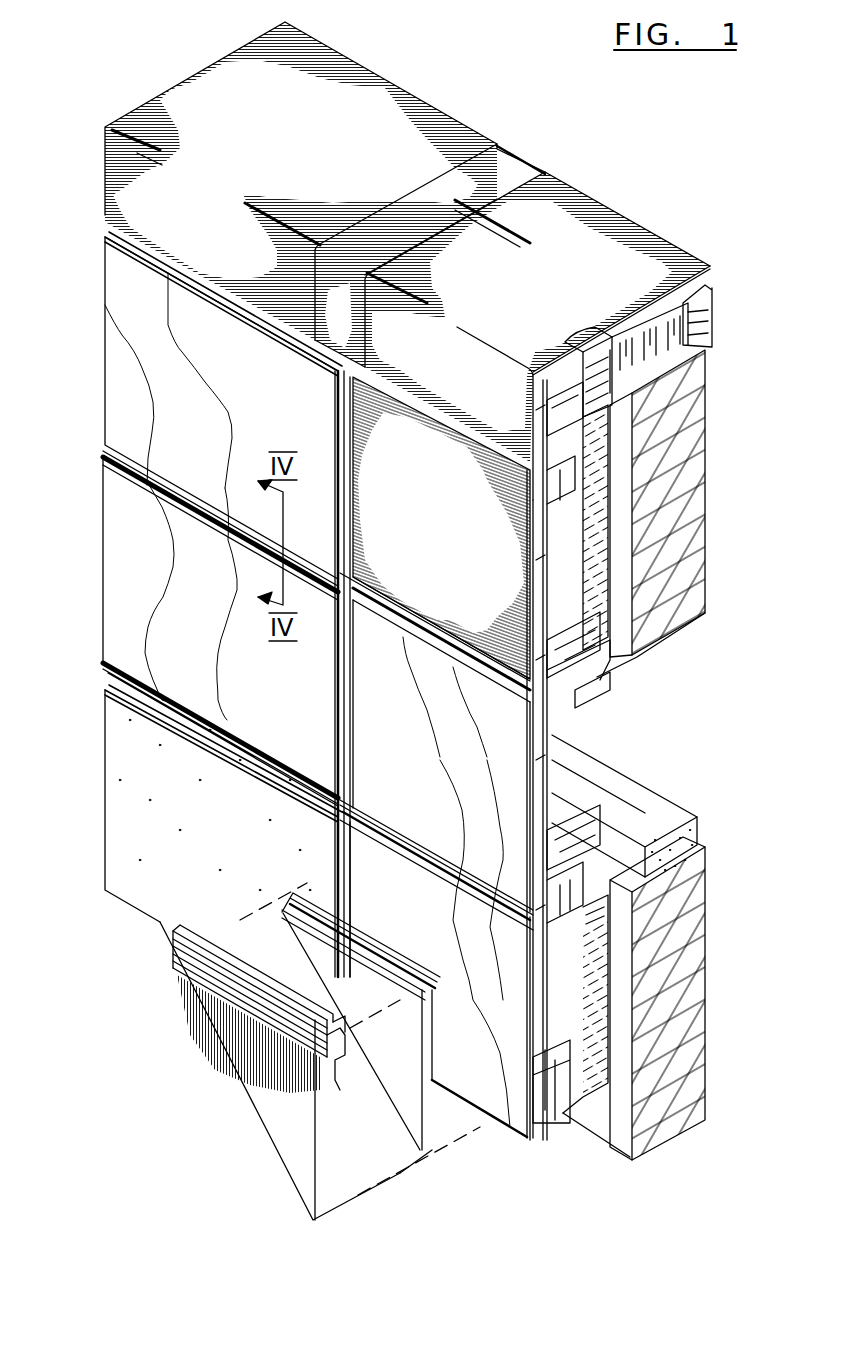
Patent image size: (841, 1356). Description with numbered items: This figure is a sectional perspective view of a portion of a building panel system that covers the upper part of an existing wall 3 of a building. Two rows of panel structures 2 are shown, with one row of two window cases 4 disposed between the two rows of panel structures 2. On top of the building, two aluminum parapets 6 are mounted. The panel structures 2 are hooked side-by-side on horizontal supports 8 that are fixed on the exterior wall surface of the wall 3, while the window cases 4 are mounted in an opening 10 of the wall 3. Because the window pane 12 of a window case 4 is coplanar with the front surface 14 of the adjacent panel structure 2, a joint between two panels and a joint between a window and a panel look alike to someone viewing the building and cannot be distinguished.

The panel structure 2 is at (270, 431).
The wall 3 is at (690, 482).
The window case 4 is at (275, 703).
The aluminum parapet 6 is at (326, 176).
The horizontal support 8 is at (585, 495).
The opening 10 is at (690, 730).
The window pane 12 is at (105, 575).
The front surface 14 is at (105, 370).